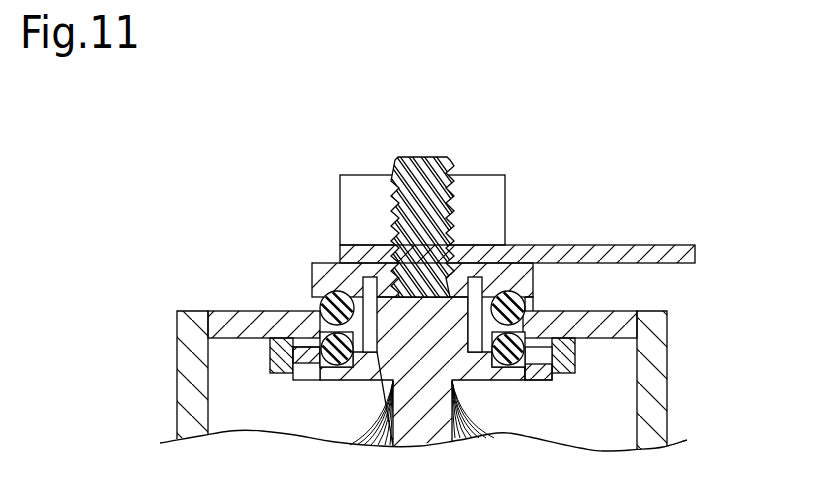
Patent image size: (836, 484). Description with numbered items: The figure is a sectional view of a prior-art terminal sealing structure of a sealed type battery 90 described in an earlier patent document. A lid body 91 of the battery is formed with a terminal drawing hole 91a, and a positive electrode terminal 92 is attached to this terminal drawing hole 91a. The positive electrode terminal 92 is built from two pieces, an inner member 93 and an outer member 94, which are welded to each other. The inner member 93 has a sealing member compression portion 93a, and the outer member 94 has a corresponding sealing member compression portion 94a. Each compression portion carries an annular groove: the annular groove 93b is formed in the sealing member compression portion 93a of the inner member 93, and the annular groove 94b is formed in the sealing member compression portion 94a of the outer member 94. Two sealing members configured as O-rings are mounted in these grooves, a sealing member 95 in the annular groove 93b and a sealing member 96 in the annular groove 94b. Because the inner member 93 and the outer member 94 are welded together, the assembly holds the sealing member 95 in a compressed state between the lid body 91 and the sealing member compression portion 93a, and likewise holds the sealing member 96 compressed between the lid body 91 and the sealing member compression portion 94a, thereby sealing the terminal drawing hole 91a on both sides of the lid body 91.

The sealed type battery 90 is at (708, 207).
The lid body 91 is at (632, 311).
The terminal drawing hole 91a is at (357, 381).
The positive electrode terminal 92 is at (433, 156).
The inner member 93 is at (545, 383).
The sealing member compression portion 93a is at (300, 383).
The annular groove 93b is at (309, 382).
The outer member 94 is at (315, 267).
The sealing member compression portion 94a is at (322, 291).
The annular groove 94b is at (333, 295).
The sealing member 95 is at (497, 381).
The sealing member 96 is at (530, 305).